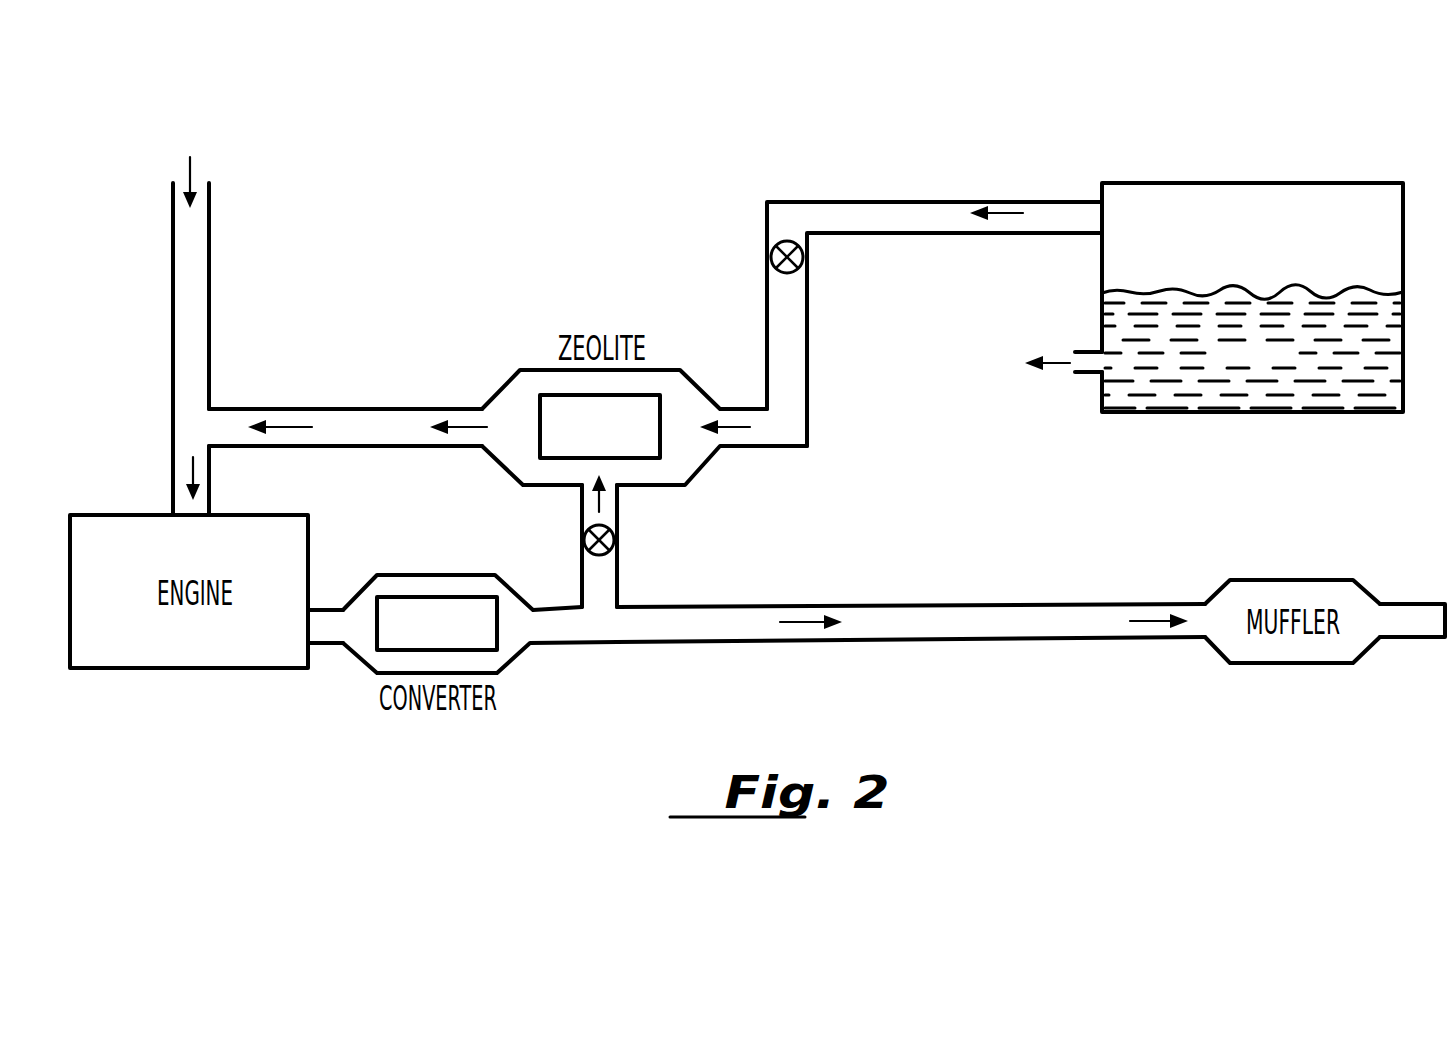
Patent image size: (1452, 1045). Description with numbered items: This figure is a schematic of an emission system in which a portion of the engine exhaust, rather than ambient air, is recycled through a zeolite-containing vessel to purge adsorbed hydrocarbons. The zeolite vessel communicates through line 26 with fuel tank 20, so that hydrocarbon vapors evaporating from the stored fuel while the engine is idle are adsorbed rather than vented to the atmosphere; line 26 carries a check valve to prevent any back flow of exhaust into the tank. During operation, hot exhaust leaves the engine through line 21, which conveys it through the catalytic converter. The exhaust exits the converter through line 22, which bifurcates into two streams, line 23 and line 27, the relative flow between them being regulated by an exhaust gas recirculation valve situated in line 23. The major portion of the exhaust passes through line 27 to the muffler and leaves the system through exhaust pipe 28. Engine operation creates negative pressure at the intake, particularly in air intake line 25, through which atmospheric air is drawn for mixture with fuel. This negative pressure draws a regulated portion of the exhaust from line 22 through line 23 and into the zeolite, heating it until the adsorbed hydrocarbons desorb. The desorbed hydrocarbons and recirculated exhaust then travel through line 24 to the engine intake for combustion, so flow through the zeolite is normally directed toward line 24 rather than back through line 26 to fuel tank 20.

The fuel tank 20 is at (1343, 183).
The line 21 is at (335, 630).
The line 22 is at (566, 628).
The line 23 is at (590, 576).
The line 24 is at (380, 418).
The air intake line 25 is at (204, 279).
The line 26 is at (862, 208).
The line 27 is at (985, 625).
The exhaust pipe 28 is at (1413, 628).